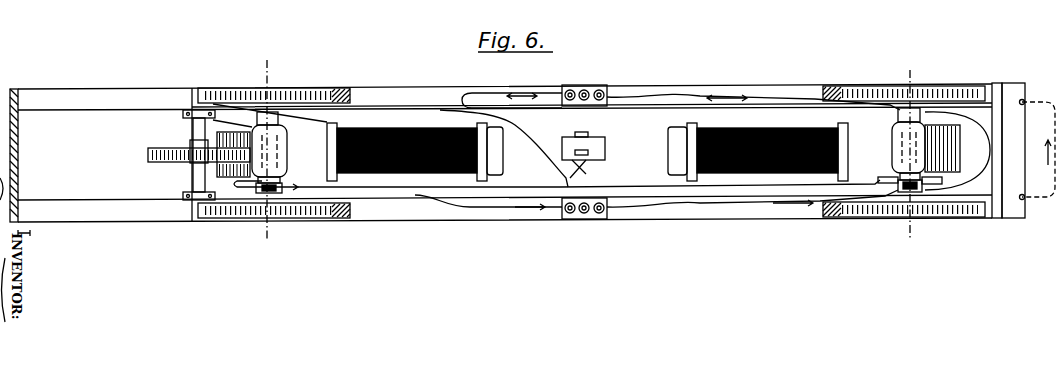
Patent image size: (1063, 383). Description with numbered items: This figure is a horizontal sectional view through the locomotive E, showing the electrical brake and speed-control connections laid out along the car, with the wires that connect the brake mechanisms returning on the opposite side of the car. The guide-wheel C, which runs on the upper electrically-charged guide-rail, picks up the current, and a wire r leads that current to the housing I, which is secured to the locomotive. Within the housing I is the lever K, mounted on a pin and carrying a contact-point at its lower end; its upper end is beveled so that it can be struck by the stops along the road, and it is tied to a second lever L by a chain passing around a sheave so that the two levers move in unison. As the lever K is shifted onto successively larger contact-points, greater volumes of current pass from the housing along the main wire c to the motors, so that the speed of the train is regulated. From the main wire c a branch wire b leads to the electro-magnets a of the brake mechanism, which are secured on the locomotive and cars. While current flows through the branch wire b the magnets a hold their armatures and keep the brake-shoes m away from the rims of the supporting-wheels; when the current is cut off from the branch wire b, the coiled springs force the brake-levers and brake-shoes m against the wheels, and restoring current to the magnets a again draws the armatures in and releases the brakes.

The locomotive E is at (163, 93).
The brake-shoes m is at (345, 88).
The guide-wheels C is at (186, 157).
The wire r is at (335, 122).
The electro-magnets a is at (585, 90).
The branch wire b is at (657, 153).
The main wire c is at (572, 176).
The housing I is at (605, 145).
The lever K is at (592, 131).
The second lever L is at (590, 162).